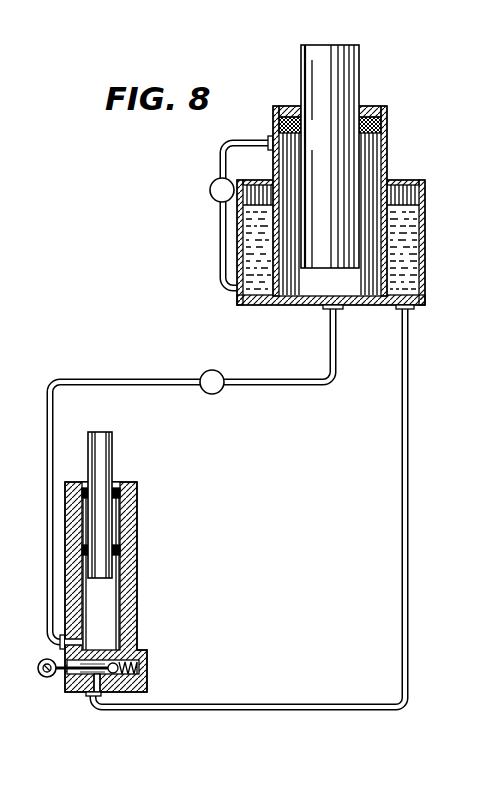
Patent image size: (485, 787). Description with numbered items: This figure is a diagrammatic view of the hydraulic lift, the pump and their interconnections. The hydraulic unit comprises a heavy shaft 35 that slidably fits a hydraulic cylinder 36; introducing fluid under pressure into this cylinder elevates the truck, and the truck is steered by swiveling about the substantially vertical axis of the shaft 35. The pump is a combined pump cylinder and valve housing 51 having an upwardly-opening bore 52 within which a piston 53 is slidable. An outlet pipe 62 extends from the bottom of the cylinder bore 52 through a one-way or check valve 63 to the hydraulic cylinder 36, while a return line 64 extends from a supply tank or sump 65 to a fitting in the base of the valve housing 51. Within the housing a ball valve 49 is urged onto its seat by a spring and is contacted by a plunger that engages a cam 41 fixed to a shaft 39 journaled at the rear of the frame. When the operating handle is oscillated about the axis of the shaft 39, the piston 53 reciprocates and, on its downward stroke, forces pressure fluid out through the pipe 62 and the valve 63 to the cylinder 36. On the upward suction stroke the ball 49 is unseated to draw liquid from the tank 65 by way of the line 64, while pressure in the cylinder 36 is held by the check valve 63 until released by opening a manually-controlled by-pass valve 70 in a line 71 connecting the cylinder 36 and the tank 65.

The heavy shaft 35 is at (308, 72).
The hydraulic cylinder 36 is at (388, 150).
The shaft 39 is at (44, 660).
The cam element 41 is at (68, 691).
The ball valve 49 is at (146, 683).
The combined pump cylinder and valve housing 51 is at (138, 515).
The cylinder bore 52 is at (118, 590).
The piston 53 is at (108, 450).
The outlet pipe 62 is at (102, 379).
The check valve 63 is at (219, 395).
The return line 64 is at (401, 477).
The supply tank 65 is at (426, 224).
The by-pass valve 70 is at (210, 192).
The line 71 is at (220, 241).